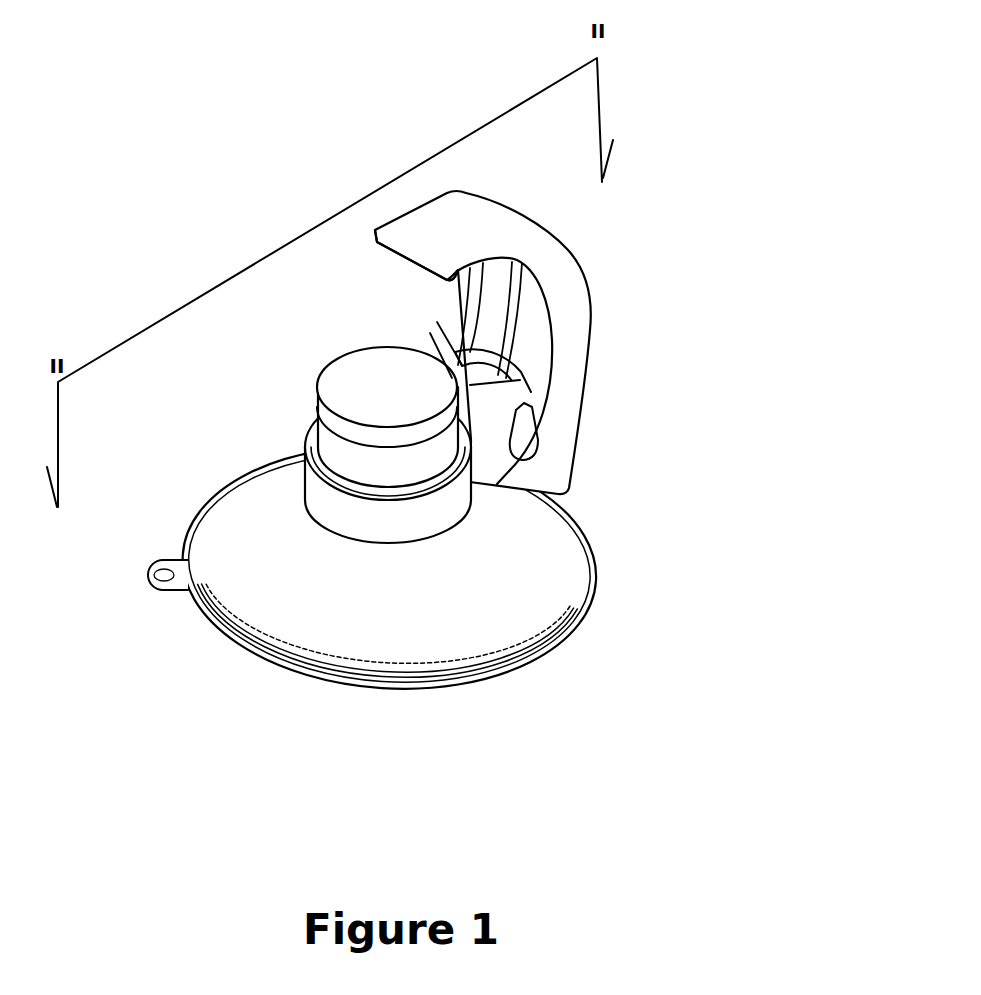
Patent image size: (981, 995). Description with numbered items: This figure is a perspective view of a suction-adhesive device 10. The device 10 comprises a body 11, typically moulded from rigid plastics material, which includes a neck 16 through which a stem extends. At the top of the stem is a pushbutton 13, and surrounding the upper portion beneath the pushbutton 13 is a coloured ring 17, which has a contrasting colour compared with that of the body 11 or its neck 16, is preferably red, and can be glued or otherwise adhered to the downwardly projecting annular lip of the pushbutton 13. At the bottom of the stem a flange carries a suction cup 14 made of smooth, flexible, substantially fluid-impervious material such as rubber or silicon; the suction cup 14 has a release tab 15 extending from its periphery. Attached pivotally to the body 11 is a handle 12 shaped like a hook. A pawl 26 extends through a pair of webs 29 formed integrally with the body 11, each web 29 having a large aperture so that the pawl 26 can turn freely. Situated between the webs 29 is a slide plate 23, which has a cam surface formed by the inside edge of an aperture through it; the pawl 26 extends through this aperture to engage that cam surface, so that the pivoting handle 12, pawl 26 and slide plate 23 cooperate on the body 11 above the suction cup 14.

The suction-adhesive device 10 is at (740, 196).
The body 11 is at (255, 503).
The handle 12 is at (565, 385).
The pushbutton 13 is at (347, 377).
The suction cup 14 is at (287, 673).
The release tab 15 is at (157, 562).
The neck 16 is at (418, 518).
The coloured ring 17 is at (335, 448).
The slide plate 23 is at (490, 385).
The pawl 26 is at (528, 441).
The webs 29 is at (431, 338).